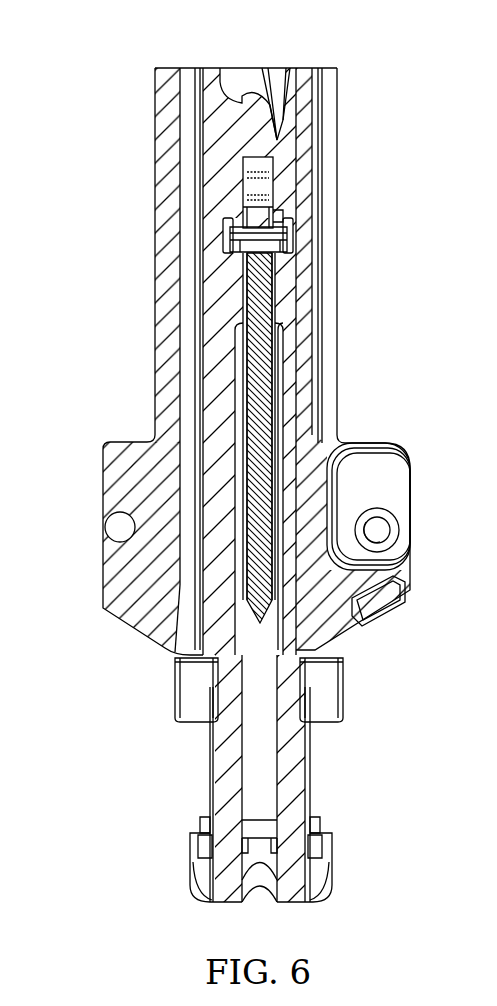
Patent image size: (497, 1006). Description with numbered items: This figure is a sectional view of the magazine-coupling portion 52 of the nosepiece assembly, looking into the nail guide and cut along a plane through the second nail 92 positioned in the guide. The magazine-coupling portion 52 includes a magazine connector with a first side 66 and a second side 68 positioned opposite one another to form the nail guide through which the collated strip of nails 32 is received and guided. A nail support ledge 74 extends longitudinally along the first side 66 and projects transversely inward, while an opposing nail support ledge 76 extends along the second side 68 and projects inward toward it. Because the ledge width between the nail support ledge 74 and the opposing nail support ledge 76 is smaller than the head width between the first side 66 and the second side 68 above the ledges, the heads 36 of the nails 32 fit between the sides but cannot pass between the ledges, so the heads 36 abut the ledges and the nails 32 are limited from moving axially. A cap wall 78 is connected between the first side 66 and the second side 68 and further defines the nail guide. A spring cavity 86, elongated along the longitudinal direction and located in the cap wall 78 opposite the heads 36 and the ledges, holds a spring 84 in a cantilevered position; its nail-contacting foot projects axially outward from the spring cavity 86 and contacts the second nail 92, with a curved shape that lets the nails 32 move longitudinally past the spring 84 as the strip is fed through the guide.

The magazine-coupling portion 52 is at (94, 38).
The spring cavity 86 is at (243, 184).
The spring 84 is at (257, 215).
The first side 66 is at (230, 238).
The second side 68 is at (288, 229).
The cap wall 78 is at (276, 217).
The heads 36 is at (285, 241).
The nail support ledge 74 is at (227, 280).
The opposing nail support ledge 76 is at (283, 255).
The nails 32 is at (275, 320).
The second nail 92 is at (263, 378).